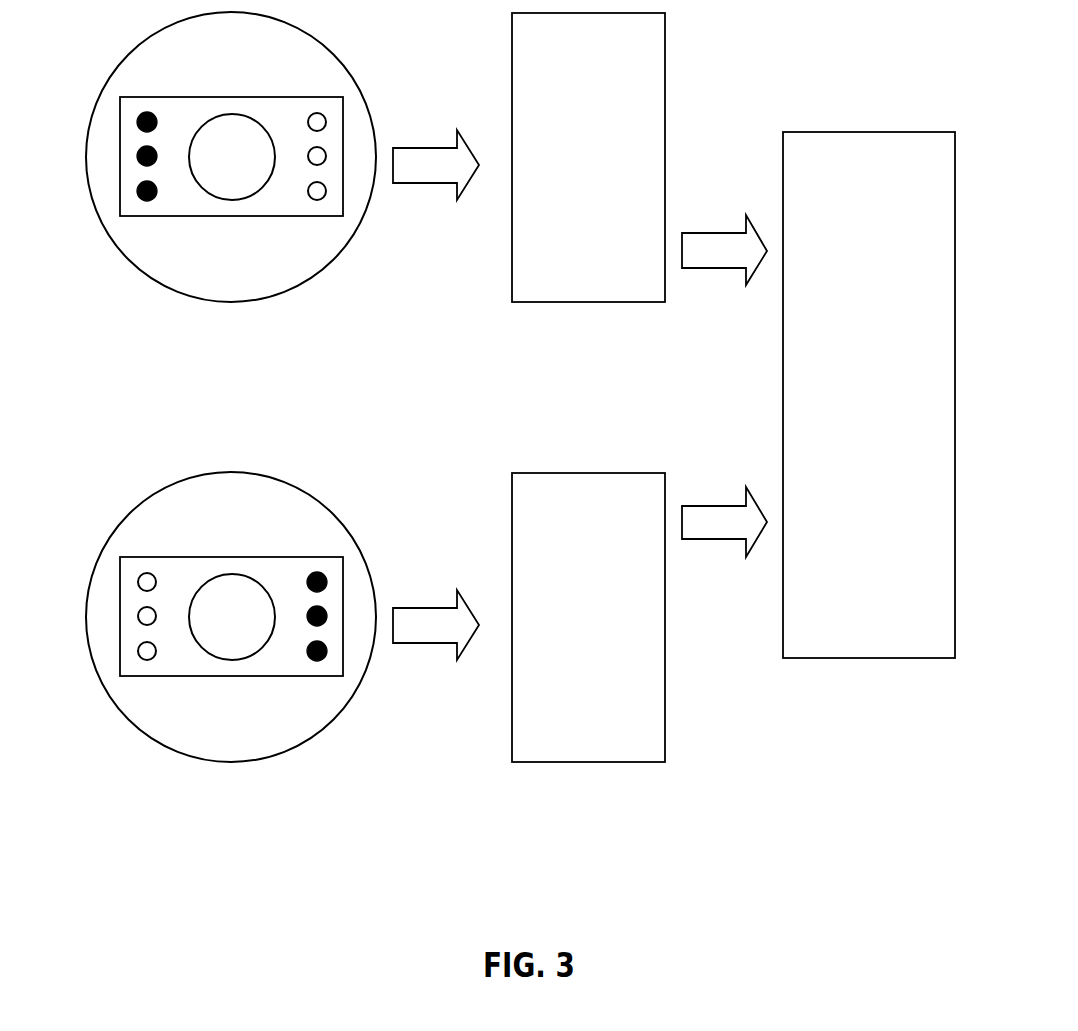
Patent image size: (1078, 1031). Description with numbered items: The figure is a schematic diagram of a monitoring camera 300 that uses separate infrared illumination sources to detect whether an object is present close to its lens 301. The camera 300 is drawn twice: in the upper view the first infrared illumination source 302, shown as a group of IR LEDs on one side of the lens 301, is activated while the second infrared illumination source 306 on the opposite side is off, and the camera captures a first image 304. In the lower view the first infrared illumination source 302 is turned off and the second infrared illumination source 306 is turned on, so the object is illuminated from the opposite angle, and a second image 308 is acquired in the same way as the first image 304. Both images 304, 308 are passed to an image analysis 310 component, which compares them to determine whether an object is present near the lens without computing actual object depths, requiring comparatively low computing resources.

The monitoring camera 300 is at (204, 71).
The lens 301 is at (204, 175).
The first infrared illumination source 302 is at (124, 99).
The first image 304 is at (612, 192).
The second infrared illumination source 306 is at (336, 99).
The second image 308 is at (612, 652).
The image analysis 310 is at (845, 448).